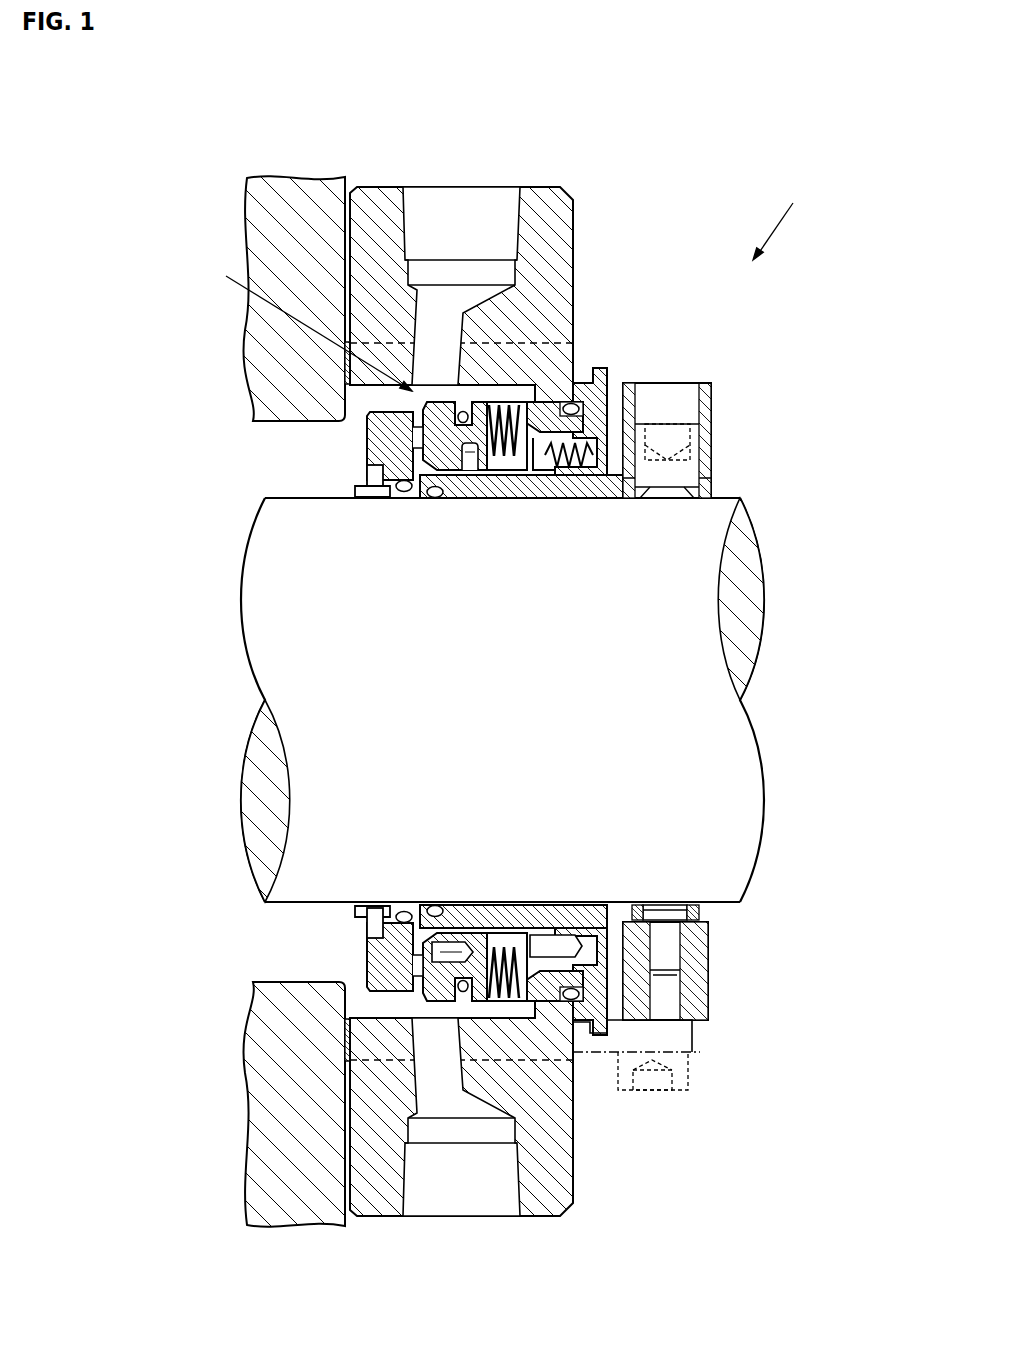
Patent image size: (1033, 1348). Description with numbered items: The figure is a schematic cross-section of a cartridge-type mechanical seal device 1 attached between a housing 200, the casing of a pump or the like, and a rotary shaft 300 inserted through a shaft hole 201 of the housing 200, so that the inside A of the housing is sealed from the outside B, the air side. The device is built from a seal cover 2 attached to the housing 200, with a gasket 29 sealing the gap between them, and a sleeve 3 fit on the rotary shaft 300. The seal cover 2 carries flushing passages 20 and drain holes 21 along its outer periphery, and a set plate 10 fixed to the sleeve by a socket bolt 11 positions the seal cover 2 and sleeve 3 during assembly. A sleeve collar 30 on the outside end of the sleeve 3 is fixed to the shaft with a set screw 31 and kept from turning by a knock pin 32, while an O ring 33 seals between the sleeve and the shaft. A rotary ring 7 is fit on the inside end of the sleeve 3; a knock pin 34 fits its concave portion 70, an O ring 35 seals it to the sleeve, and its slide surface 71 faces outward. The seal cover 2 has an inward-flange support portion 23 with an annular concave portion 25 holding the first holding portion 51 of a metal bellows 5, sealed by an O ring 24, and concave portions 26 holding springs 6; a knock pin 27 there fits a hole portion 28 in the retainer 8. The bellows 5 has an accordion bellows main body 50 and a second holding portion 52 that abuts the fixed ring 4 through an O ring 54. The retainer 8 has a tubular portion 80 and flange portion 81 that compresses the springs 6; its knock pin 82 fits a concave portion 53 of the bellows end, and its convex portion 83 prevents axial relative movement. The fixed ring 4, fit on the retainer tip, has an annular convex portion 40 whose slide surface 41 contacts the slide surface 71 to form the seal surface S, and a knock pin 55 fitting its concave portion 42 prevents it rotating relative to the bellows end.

The mechanical seal device 1 is at (782, 220).
The seal cover 2 is at (575, 213).
The sleeve 3 is at (612, 497).
The fixed ring 4 is at (418, 472).
The bellows 5 is at (568, 988).
The spring 6 is at (563, 468).
The rotary ring 7 is at (366, 440).
The retainer 8 is at (500, 940).
The set plate 10 is at (693, 1033).
The socket bolt 11 is at (688, 1072).
The flushing passage 20 is at (463, 207).
The drain hole 21 is at (455, 1197).
The support portion 23 is at (600, 385).
The O ring 24 is at (597, 926).
The annular concave portion 25 is at (560, 1003).
The concave portion 26 is at (615, 475).
The knock pin 27 is at (565, 945).
The hole portion 28 is at (538, 970).
The gasket 29 is at (347, 1052).
The sleeve collar 30 is at (707, 437).
The set screw 31 is at (665, 488).
The knock pin 32 is at (670, 942).
The O ring 33 is at (434, 905).
The knock pin 34 is at (376, 498).
The O ring 35 is at (403, 906).
The annular convex portion 40 is at (383, 1008).
The slide surface 41 is at (372, 971).
The concave portion 42 is at (430, 950).
The bellows main body 50 is at (571, 403).
The first holding portion 51 is at (585, 404).
The second holding portion 52 is at (550, 400).
The concave portion 53 is at (440, 425).
The O ring 54 is at (463, 980).
The knock pin 55 is at (440, 945).
The concave portion 70 is at (358, 470).
The slide surface 71 is at (413, 437).
The tubular portion 80 is at (466, 425).
The flange portion 81 is at (513, 472).
The knock pin 82 is at (470, 472).
The convex portion 83 is at (500, 472).
The housing 200 is at (300, 200).
The shaft hole 201 is at (312, 423).
The rotary shaft 300 is at (697, 672).
The seal surface S is at (311, 324).
The inside A is at (218, 442).
The outside B is at (770, 389).